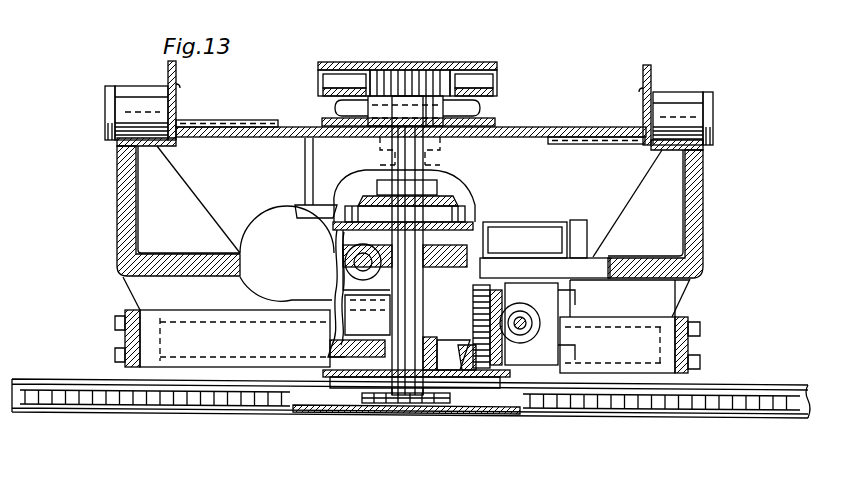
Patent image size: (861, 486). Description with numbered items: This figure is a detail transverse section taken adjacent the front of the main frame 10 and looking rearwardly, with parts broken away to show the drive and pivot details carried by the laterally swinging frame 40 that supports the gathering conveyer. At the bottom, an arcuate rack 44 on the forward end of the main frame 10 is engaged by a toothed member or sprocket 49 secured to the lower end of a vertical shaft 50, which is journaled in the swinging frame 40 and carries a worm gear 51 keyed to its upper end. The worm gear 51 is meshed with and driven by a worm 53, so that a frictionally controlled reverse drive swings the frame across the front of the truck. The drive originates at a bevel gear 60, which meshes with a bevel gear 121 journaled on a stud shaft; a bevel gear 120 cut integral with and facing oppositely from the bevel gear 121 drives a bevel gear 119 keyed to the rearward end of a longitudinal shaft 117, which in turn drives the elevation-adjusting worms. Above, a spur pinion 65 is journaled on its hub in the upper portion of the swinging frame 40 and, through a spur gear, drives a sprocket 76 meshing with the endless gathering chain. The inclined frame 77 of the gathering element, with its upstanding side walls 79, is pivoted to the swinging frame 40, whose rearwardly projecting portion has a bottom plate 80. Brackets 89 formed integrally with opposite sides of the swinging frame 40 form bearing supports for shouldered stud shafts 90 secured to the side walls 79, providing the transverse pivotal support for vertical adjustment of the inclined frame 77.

The main frame or truck 10 is at (683, 425).
The laterally swinging frame 40 is at (133, 289).
The arcuate rack 44 is at (261, 400).
The toothed member or sprocket 49 is at (452, 402).
The vertical shaft 50 is at (393, 380).
The worm gear 51 is at (455, 265).
The worm 53 is at (337, 300).
The bevel gear 60 is at (328, 350).
The spur pinion 65 is at (455, 85).
The sprocket 76 is at (480, 108).
The inclined frame 77 is at (612, 144).
The side walls 79 is at (168, 65).
The bottom plate 80 is at (517, 138).
The brackets 89 is at (128, 88).
The shouldered stud shafts 90 is at (108, 111).
The longitudinal shaft 117 is at (540, 323).
The bevel gear 119 is at (540, 308).
The bevel gear 120 is at (496, 368).
The bevel gear 121 is at (470, 358).